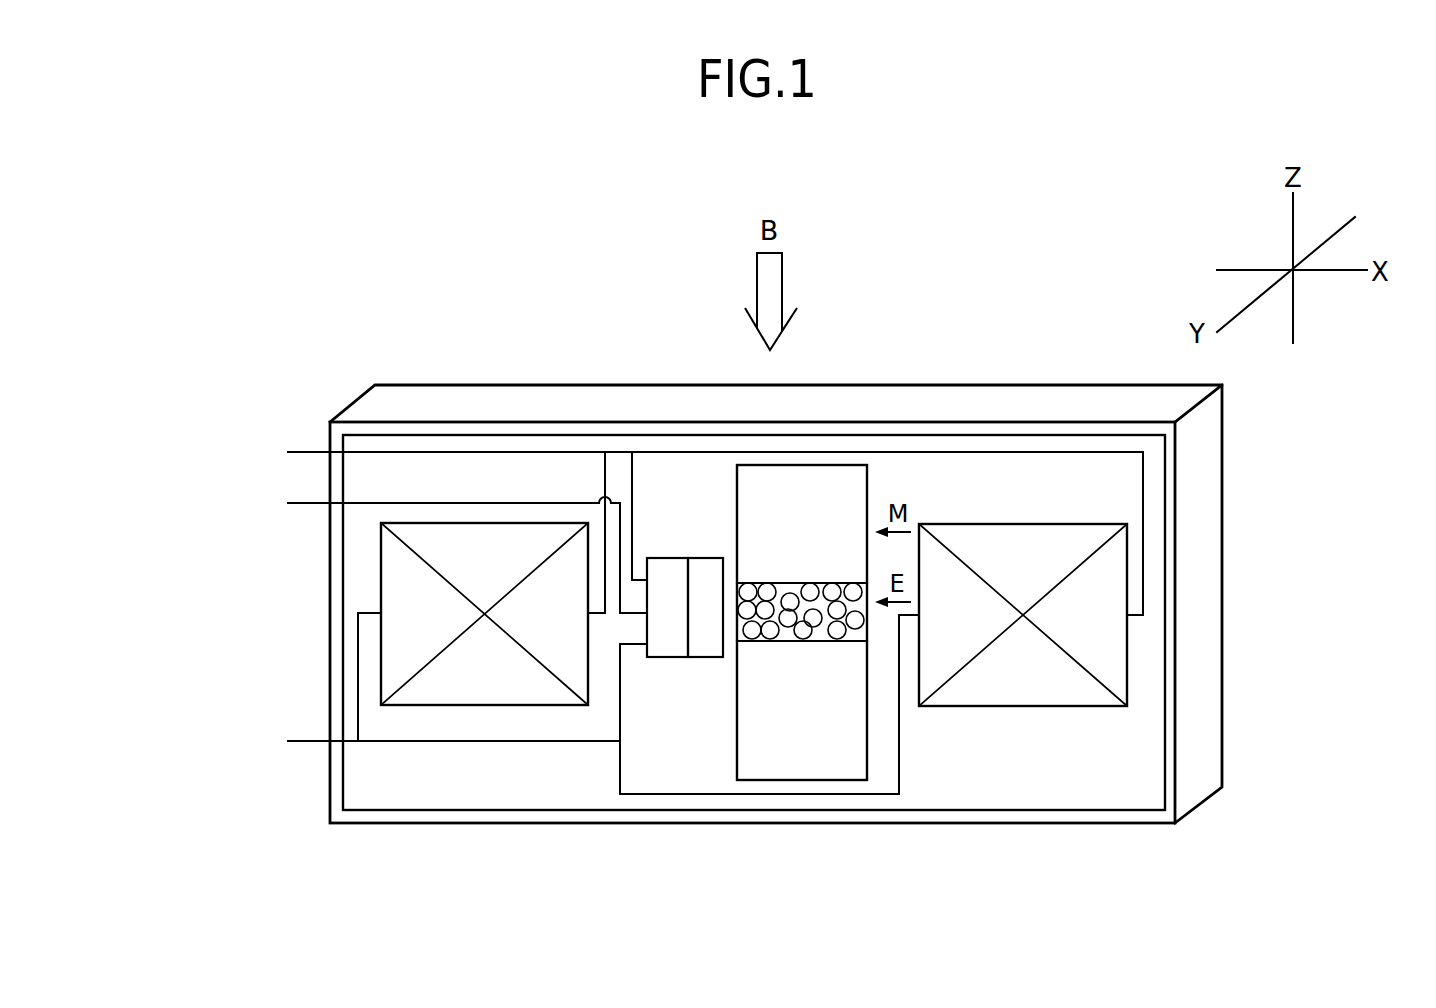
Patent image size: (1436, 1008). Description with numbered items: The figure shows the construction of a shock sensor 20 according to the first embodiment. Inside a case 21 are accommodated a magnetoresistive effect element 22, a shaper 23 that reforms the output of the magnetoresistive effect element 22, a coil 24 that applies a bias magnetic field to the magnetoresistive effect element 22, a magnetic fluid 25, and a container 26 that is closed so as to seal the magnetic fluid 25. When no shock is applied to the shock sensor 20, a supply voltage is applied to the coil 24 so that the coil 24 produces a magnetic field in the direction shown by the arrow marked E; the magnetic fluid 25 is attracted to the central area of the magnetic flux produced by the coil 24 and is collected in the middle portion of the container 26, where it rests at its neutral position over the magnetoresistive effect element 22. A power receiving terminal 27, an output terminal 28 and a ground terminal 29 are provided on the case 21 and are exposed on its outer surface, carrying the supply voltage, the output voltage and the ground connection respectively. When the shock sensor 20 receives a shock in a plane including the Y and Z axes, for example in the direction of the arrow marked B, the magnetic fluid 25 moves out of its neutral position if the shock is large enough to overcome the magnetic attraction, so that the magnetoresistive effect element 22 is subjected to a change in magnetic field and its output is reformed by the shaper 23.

The shock sensor 20 is at (520, 348).
The case 21 is at (1017, 422).
The magnetoresistive effect element 22 is at (707, 640).
The shaper 23 is at (662, 575).
The coil 24 is at (485, 690).
The magnetic fluid 25 is at (802, 640).
The container 26 is at (830, 466).
The power receiving terminal 27 is at (668, 528).
The output terminal 28 is at (420, 551).
The ground terminal 29 is at (556, 703).